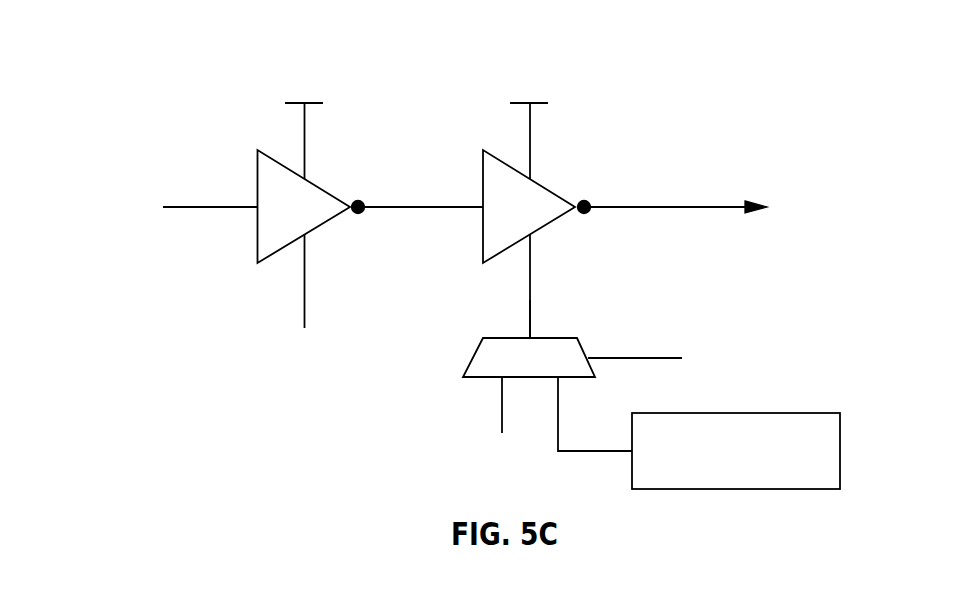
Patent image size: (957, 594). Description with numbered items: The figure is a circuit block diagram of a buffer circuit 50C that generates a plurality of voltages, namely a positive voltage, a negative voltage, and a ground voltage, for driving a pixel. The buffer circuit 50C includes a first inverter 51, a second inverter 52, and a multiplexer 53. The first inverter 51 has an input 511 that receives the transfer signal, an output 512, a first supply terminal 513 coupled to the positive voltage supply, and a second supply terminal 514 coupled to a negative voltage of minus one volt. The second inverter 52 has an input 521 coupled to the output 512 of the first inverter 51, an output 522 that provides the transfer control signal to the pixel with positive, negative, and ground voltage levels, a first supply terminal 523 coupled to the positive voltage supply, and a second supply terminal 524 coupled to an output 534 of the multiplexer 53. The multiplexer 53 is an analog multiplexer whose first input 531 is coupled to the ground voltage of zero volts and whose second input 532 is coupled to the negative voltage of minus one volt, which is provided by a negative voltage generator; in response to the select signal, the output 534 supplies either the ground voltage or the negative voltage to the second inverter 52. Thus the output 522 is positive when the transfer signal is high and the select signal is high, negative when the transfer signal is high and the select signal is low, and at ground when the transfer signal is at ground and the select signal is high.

The buffer circuit 50C is at (834, 106).
The first inverter 51 is at (333, 193).
The input 511 is at (210, 196).
The output 512 is at (420, 196).
The first supply terminal 513 is at (296, 128).
The second supply terminal 514 is at (294, 297).
The second inverter 52 is at (555, 190).
The input 521 is at (451, 196).
The output 522 is at (675, 198).
The first supply terminal 523 is at (520, 128).
The second supply terminal 524 is at (509, 287).
The multiplexer 53 is at (557, 338).
The first input 531 is at (484, 417).
The second input 532 is at (595, 414).
The output 534 is at (511, 320).